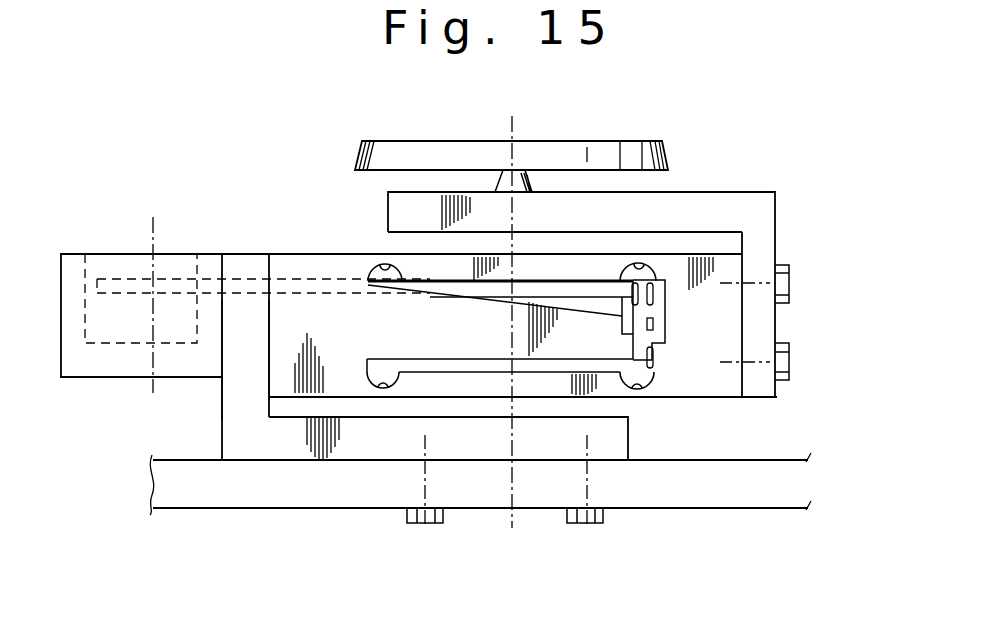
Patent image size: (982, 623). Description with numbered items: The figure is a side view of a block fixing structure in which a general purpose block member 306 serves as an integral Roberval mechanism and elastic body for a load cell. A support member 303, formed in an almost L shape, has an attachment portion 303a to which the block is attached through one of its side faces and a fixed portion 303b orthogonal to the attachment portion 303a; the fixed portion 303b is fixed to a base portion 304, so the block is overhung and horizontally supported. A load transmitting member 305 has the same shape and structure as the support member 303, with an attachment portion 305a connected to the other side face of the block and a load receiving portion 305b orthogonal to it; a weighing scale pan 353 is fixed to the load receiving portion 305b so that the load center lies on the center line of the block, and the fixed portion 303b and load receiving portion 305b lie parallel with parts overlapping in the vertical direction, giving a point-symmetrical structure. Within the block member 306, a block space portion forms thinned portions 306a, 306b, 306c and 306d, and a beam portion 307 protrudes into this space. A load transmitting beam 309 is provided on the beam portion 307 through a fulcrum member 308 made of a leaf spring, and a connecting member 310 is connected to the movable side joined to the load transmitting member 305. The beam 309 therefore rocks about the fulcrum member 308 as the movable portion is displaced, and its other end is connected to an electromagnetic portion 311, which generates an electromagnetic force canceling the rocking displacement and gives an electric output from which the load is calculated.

The support member 303 is at (240, 422).
The attachment portion 303a is at (247, 335).
The fixed portion 303b is at (392, 443).
The base portion 304 is at (225, 493).
The load transmitting member 305 is at (728, 206).
The attachment portion 305a is at (776, 324).
The load receiving portion 305b is at (673, 194).
The general purpose block member 306 is at (320, 254).
The thinned portion 306a is at (377, 265).
The thinned portion 306b is at (367, 372).
The thinned portion 306c is at (647, 384).
The thinned portion 306d is at (640, 272).
The beam portion 307 is at (470, 333).
The fulcrum member 308 is at (622, 318).
The load transmitting beam 309 is at (297, 283).
The connecting member 310 is at (655, 310).
The electromagnetic portion 311 is at (103, 254).
The weighing scale pan 353 is at (437, 141).